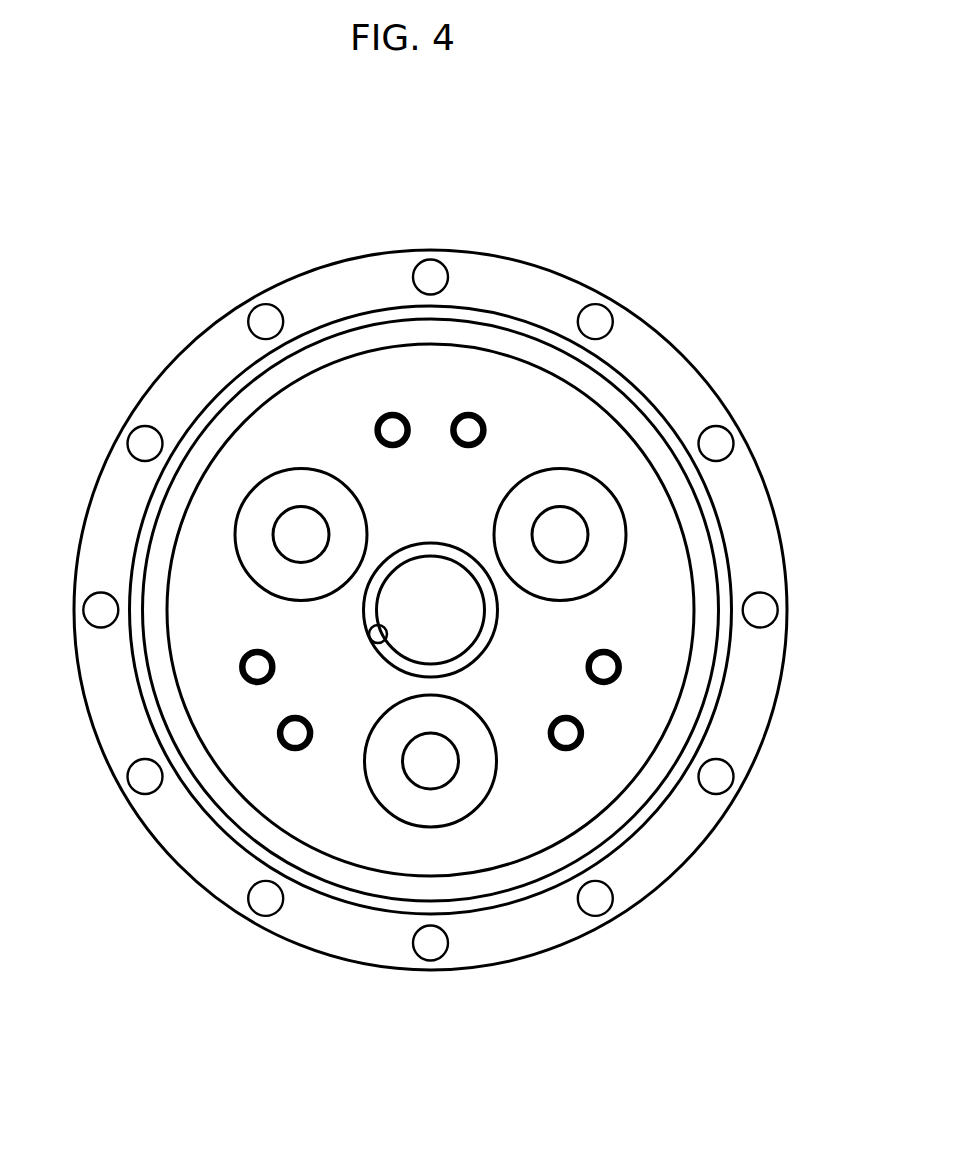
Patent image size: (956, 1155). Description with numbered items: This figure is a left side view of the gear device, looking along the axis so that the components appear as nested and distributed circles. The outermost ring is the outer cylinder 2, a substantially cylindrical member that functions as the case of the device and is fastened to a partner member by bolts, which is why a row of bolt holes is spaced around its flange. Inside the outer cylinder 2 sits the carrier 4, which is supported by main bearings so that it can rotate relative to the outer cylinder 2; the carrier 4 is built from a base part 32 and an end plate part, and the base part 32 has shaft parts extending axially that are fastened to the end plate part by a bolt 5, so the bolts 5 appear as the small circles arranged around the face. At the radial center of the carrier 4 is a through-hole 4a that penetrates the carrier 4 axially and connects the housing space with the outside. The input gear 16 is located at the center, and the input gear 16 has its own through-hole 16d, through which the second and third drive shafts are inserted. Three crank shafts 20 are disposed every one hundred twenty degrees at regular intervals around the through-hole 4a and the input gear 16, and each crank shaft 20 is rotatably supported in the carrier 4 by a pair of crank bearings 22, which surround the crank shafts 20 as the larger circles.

The outer cylinder 2 is at (648, 373).
The carrier 4 is at (495, 332).
The through-hole 4a is at (377, 643).
The bolt 5 is at (467, 428).
The input gear 16 is at (490, 630).
The through-hole 16d is at (393, 570).
The crank shaft 20 is at (297, 535).
The crank bearing 22 is at (248, 547).
The base part 32 is at (430, 378).